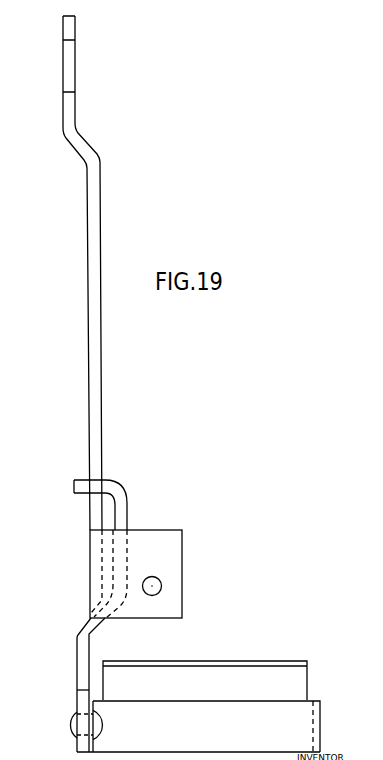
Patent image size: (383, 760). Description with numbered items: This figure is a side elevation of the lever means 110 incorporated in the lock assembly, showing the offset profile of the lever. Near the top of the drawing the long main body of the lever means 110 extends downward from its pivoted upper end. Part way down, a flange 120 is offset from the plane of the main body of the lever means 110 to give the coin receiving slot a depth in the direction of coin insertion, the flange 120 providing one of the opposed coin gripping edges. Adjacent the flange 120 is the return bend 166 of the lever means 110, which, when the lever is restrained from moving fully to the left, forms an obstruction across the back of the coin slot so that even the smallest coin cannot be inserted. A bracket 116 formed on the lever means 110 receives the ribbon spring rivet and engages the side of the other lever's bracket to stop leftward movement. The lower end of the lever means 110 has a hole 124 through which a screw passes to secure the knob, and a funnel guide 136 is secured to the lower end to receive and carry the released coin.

The lever means 110 is at (103, 194).
The return bend 166 is at (81, 479).
The flange 120 is at (122, 503).
The bracket 116 is at (175, 548).
The hole 124 is at (75, 655).
The funnel guide 136 is at (218, 673).